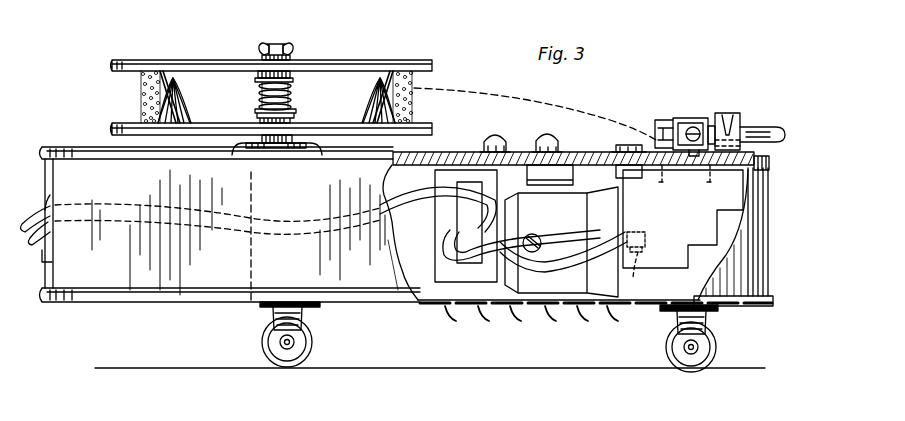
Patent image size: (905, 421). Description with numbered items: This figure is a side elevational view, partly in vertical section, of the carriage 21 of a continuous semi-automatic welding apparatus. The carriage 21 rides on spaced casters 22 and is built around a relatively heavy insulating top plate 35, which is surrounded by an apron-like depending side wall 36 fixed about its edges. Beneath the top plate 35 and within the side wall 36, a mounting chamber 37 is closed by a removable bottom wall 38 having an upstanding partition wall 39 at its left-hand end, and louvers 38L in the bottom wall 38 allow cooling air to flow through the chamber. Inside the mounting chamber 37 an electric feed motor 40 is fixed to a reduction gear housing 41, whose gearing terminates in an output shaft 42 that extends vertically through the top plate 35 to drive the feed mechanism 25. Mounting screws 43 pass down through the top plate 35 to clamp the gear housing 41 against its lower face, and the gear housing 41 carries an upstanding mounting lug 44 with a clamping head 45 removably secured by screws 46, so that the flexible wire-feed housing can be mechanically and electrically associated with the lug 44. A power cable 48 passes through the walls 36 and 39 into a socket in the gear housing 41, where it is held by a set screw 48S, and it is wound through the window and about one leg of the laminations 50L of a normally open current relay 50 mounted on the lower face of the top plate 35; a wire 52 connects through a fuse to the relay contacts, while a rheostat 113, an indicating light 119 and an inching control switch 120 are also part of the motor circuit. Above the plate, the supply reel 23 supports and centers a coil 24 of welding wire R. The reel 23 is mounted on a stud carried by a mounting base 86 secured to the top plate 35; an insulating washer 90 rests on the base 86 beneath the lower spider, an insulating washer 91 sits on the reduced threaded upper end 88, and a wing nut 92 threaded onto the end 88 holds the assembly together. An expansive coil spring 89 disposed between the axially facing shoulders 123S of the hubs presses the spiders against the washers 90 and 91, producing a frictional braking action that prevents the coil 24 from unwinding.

The carriage 21 is at (99, 305).
The casters 22 is at (262, 341).
The supply reel 23 is at (133, 58).
The coil 24 is at (128, 94).
The feed mechanism 25 is at (681, 116).
The top plate 35 is at (442, 152).
The side wall 36 is at (741, 246).
The mounting chamber 37 is at (424, 302).
The bottom wall 38 is at (445, 310).
The louvers 38L is at (548, 312).
The partition wall 39 is at (250, 248).
The electric feed motor 40 is at (562, 229).
The reduction gear housing 41 is at (676, 230).
The output shaft 42 is at (699, 118).
The mounting screws 43 is at (706, 178).
The mounting lug 44 is at (750, 150).
The clamping head 45 is at (733, 112).
The screws 46 is at (742, 118).
The power cable 48 is at (53, 237).
The set screw 48S is at (649, 261).
The current relay 50 is at (428, 248).
The laminations 50L is at (462, 223).
The wire 52 is at (52, 195).
The mounting base 86 is at (302, 150).
The reduced screw threaded upper end 88 is at (268, 44).
The coil spring 89 is at (292, 100).
The insulating washer 90 is at (240, 146).
The insulating washer 91 is at (258, 58).
The wing nut 92 is at (294, 46).
The rheostat 113 is at (553, 130).
The indicating light 119 is at (493, 140).
The inching control switch 120 is at (629, 145).
The axially facing shoulders 123S is at (260, 112).
The welding wire R is at (556, 105).